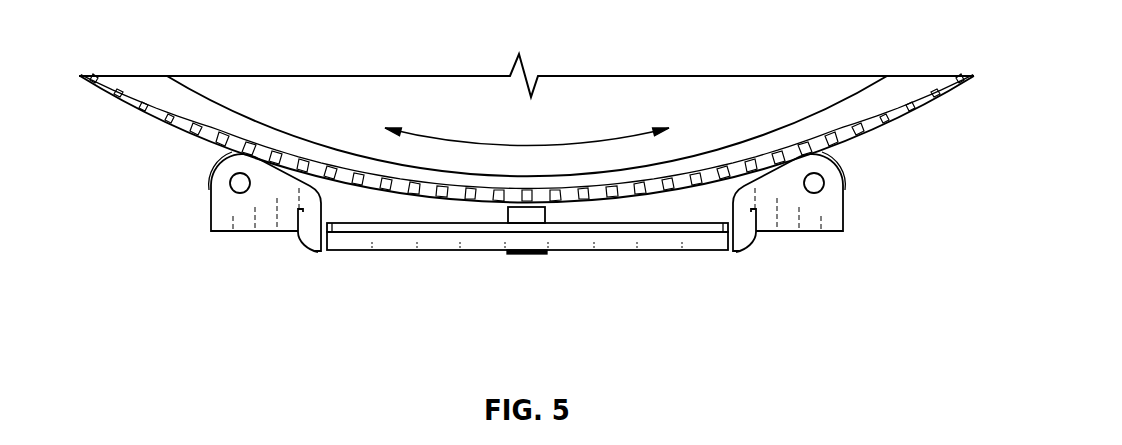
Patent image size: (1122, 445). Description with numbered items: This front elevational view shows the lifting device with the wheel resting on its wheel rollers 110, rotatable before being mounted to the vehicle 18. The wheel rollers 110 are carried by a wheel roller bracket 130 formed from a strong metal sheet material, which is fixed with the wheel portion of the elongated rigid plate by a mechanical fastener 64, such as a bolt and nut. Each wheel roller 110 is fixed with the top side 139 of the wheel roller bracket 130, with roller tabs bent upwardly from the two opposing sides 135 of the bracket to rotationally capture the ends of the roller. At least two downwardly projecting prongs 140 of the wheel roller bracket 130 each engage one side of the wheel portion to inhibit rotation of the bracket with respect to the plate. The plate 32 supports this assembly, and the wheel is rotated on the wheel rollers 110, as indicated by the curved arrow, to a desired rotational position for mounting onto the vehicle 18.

The vehicle 18 is at (255, 101).
The wheel roller 110 is at (215, 160).
The wheel roller bracket 130 is at (509, 232).
The opposing sides 135 is at (250, 222).
The top side 139 is at (375, 223).
The downwardly projecting prong 140 is at (313, 247).
The base plate 32 is at (488, 250).
The mechanical fastener 64 is at (522, 254).